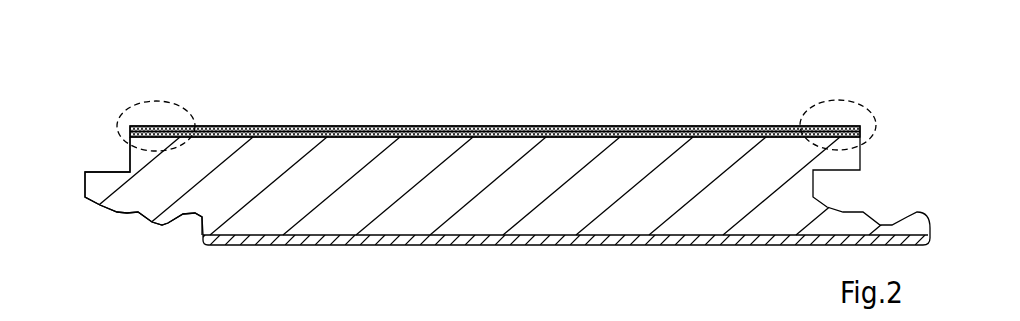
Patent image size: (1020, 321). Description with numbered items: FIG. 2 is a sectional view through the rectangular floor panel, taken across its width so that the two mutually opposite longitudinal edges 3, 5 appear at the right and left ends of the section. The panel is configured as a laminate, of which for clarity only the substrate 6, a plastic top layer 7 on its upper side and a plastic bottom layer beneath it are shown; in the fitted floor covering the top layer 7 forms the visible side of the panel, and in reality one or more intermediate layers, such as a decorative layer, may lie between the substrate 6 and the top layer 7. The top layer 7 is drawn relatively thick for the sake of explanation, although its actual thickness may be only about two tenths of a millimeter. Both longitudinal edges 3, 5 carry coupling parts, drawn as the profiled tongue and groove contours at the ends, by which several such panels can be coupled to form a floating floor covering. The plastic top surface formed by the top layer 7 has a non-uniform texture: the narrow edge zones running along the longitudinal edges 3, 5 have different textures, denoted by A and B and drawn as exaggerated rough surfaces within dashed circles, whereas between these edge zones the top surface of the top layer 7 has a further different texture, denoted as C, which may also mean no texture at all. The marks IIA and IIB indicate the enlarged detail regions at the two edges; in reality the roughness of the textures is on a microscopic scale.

The longitudinal edge 3 is at (862, 160).
The longitudinal edge 5 is at (130, 150).
The substrate 6 is at (492, 170).
The plastic top layer 7 is at (457, 127).
The texture C is at (540, 135).
The texture A is at (157, 130).
The texture B is at (833, 130).
The section IIA indication IIA is at (183, 112).
The section IIB indication IIB is at (803, 113).